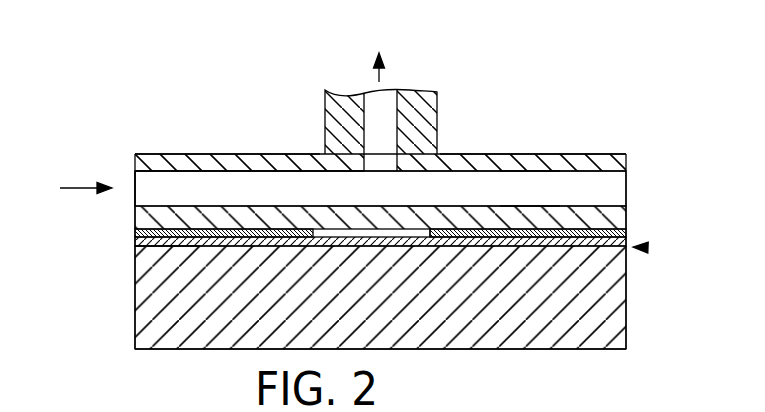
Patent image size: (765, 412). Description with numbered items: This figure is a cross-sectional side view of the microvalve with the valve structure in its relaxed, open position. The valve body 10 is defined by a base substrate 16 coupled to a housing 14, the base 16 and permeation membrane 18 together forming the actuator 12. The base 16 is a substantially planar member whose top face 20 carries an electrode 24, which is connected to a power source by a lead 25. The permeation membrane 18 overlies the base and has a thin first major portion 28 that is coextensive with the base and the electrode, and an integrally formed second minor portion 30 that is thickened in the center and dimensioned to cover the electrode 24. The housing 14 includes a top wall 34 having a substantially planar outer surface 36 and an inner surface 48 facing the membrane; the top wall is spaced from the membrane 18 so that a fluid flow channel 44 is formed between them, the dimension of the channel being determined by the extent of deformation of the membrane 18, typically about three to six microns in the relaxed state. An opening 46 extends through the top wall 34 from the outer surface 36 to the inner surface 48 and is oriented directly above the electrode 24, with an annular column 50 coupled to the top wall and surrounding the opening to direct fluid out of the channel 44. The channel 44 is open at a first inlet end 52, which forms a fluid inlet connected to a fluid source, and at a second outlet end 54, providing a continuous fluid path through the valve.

The valve body 10 is at (628, 72).
The actuator 12 is at (648, 247).
The housing 14 is at (628, 160).
The base substrate 16 is at (608, 308).
The permeation membrane 18 is at (125, 216).
The top face 20 is at (133, 238).
The electrode 24 is at (276, 256).
The lead 25 is at (133, 242).
The first major portion 28 is at (583, 262).
The second minor portion 30 is at (442, 235).
The top wall 34 is at (598, 153).
The outer surface 36 is at (254, 154).
The fluid flow channel 44 is at (529, 190).
The opening 46 is at (382, 165).
The inner surface 48 is at (267, 172).
The annular column 50 is at (438, 117).
The first inlet end 52 is at (131, 187).
The second outlet end 54 is at (618, 190).